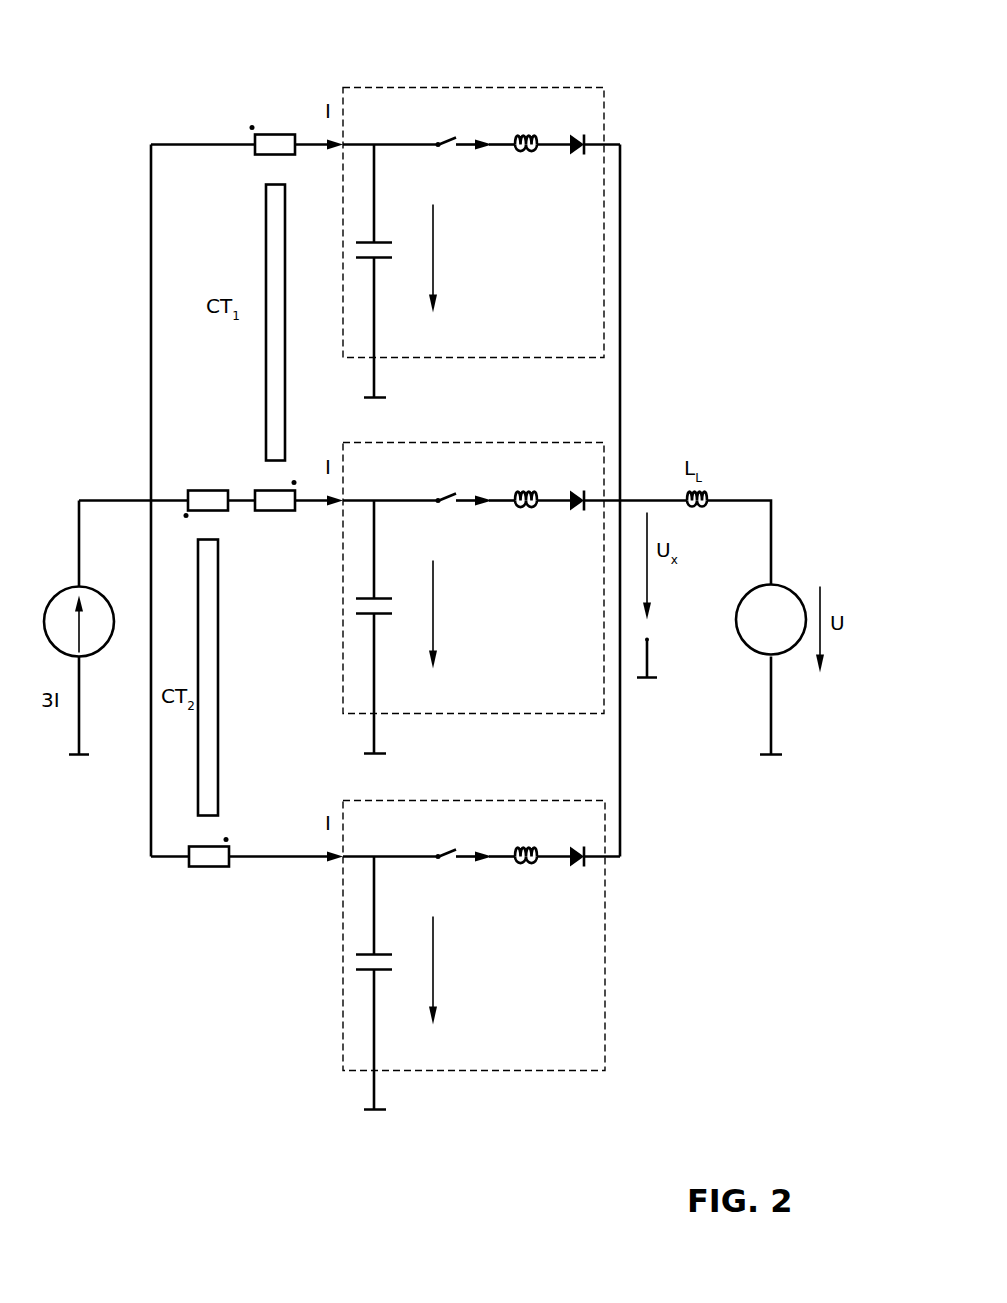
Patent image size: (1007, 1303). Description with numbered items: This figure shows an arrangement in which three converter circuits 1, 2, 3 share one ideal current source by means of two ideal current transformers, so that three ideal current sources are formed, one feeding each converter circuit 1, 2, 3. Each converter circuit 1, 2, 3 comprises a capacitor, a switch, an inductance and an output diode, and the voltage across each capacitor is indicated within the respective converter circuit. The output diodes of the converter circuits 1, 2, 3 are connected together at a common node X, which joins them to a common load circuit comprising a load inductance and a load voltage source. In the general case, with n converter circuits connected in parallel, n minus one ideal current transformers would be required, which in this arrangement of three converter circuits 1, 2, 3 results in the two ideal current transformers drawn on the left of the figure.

The converter circuit 1 is at (604, 108).
The converter circuit 2 is at (497, 444).
The converter circuit 3 is at (606, 907).
The common output node X is at (622, 500).